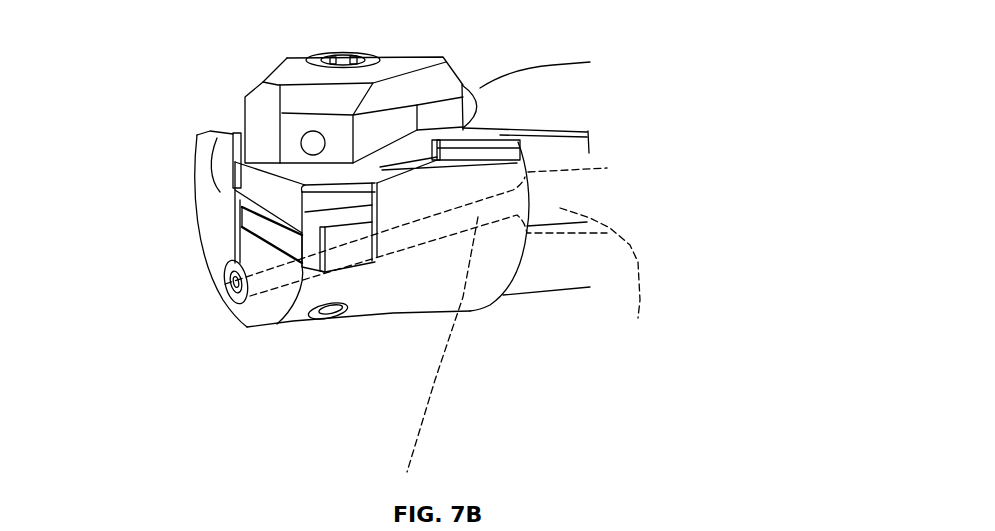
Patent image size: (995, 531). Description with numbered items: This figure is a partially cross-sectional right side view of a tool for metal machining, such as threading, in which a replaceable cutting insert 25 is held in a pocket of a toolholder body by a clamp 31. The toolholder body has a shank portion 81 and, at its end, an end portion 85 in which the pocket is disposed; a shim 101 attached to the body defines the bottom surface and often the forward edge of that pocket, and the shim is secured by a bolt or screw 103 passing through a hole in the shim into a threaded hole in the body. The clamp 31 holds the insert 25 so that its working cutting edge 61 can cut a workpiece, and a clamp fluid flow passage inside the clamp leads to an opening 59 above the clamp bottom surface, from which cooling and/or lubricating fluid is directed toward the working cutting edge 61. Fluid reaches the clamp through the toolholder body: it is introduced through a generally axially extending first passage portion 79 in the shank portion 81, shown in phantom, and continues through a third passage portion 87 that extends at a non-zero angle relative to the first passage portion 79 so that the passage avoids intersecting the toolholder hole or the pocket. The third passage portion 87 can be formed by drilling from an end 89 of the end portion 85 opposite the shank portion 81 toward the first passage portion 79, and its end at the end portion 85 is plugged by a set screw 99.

The clamp 31 is at (270, 138).
The opening 59 is at (311, 152).
The working cutting edge 61 is at (362, 204).
The cutting insert 25 is at (312, 241).
The shim 101 is at (300, 267).
The set screw 99 is at (246, 300).
The end of the end portion 89 is at (260, 310).
The bolt or screw 103 is at (328, 318).
The end portion 85 is at (400, 300).
The third passage portion 87 is at (434, 358).
The first passage portion 79 is at (610, 276).
The shank portion 81 is at (553, 65).